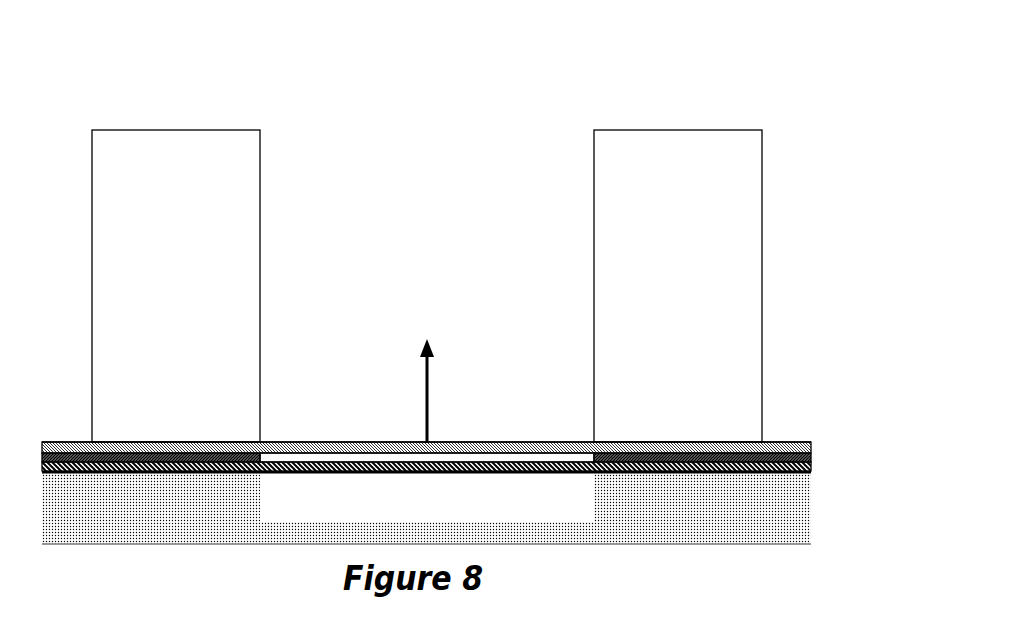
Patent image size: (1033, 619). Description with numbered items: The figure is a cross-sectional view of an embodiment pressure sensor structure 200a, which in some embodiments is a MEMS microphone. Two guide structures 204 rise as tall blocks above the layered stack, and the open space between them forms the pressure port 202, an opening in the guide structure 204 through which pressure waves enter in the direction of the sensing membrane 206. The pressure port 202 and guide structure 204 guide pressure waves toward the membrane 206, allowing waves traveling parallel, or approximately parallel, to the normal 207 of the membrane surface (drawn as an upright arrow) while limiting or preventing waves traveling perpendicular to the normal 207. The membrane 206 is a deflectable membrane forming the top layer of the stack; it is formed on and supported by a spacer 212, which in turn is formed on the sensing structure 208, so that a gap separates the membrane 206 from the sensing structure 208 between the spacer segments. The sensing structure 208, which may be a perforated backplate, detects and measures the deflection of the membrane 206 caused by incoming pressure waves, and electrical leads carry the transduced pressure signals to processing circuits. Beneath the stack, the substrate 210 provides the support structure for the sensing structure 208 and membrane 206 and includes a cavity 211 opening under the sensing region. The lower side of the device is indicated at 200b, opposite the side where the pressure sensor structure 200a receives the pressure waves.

The pressure sensor structure 200a is at (742, 88).
The second side of device 200b is at (755, 618).
The pressure port 202 is at (446, 162).
The guide structure 204 is at (237, 417).
The sensing membrane 206 is at (302, 448).
The normal 207 is at (428, 410).
The sensing structure 208 is at (523, 450).
The substrate 210 is at (618, 533).
The cavity 211 is at (312, 514).
The spacer 212 is at (775, 455).